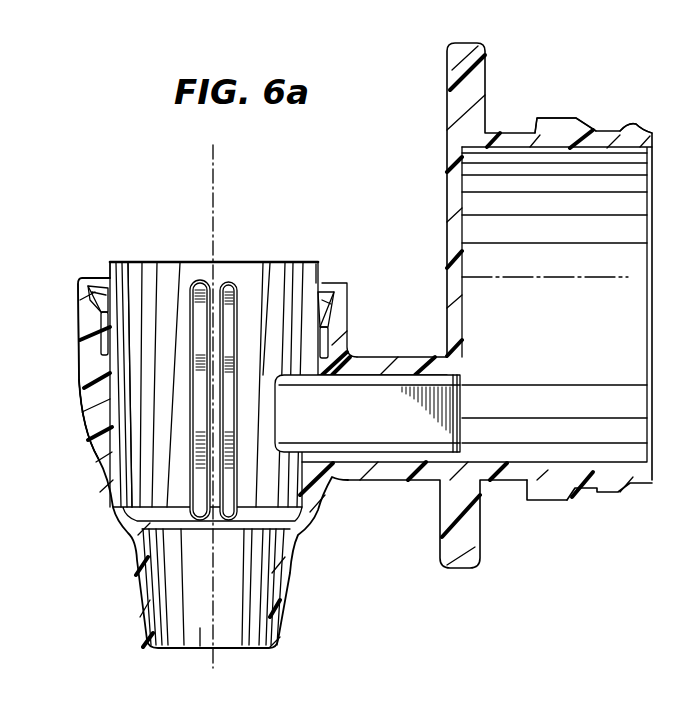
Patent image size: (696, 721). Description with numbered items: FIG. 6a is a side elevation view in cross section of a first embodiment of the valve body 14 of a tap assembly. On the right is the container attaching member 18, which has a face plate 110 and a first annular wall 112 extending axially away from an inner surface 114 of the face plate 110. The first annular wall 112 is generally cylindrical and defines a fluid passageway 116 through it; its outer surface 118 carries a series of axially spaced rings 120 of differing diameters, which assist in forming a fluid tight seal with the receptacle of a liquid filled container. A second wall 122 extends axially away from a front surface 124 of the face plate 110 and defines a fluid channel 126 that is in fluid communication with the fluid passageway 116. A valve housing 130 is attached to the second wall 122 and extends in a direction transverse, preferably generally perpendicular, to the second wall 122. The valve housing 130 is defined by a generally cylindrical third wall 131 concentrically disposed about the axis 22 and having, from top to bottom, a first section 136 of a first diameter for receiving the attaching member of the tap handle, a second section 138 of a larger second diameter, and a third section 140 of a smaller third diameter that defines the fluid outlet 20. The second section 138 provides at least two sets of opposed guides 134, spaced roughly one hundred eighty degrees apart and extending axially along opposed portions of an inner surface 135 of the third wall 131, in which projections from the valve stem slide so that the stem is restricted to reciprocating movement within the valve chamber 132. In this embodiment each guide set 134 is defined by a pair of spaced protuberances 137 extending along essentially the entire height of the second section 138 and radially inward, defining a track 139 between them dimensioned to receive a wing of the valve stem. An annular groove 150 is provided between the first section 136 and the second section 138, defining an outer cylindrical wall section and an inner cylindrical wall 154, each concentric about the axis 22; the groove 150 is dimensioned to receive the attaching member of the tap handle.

The valve body 14 is at (150, 229).
The container attaching member 18 is at (577, 490).
The exit 20 is at (228, 628).
The axis 22 is at (213, 203).
The face plate 110 is at (433, 108).
The first annular wall 112 is at (582, 103).
The inner surface 114 is at (490, 73).
The fluid passageway 116 is at (527, 403).
The outer surface 118 is at (548, 512).
The rings 120 is at (553, 123).
The second wall 122 is at (366, 368).
The front surface 124 is at (445, 152).
The fluid channel 126 is at (368, 423).
The valve housing 130 is at (68, 357).
The third wall 131 is at (84, 403).
The valve chamber 132 is at (167, 440).
The opposed guides 134 is at (230, 333).
The inner surface 135 is at (210, 244).
The first section 136 is at (97, 262).
The protuberances 137 is at (258, 300).
The second section 138 is at (62, 307).
The track 139 is at (210, 353).
The third section 140 is at (120, 587).
The annular groove 150 is at (328, 283).
The inner cylindrical wall 154 is at (318, 275).